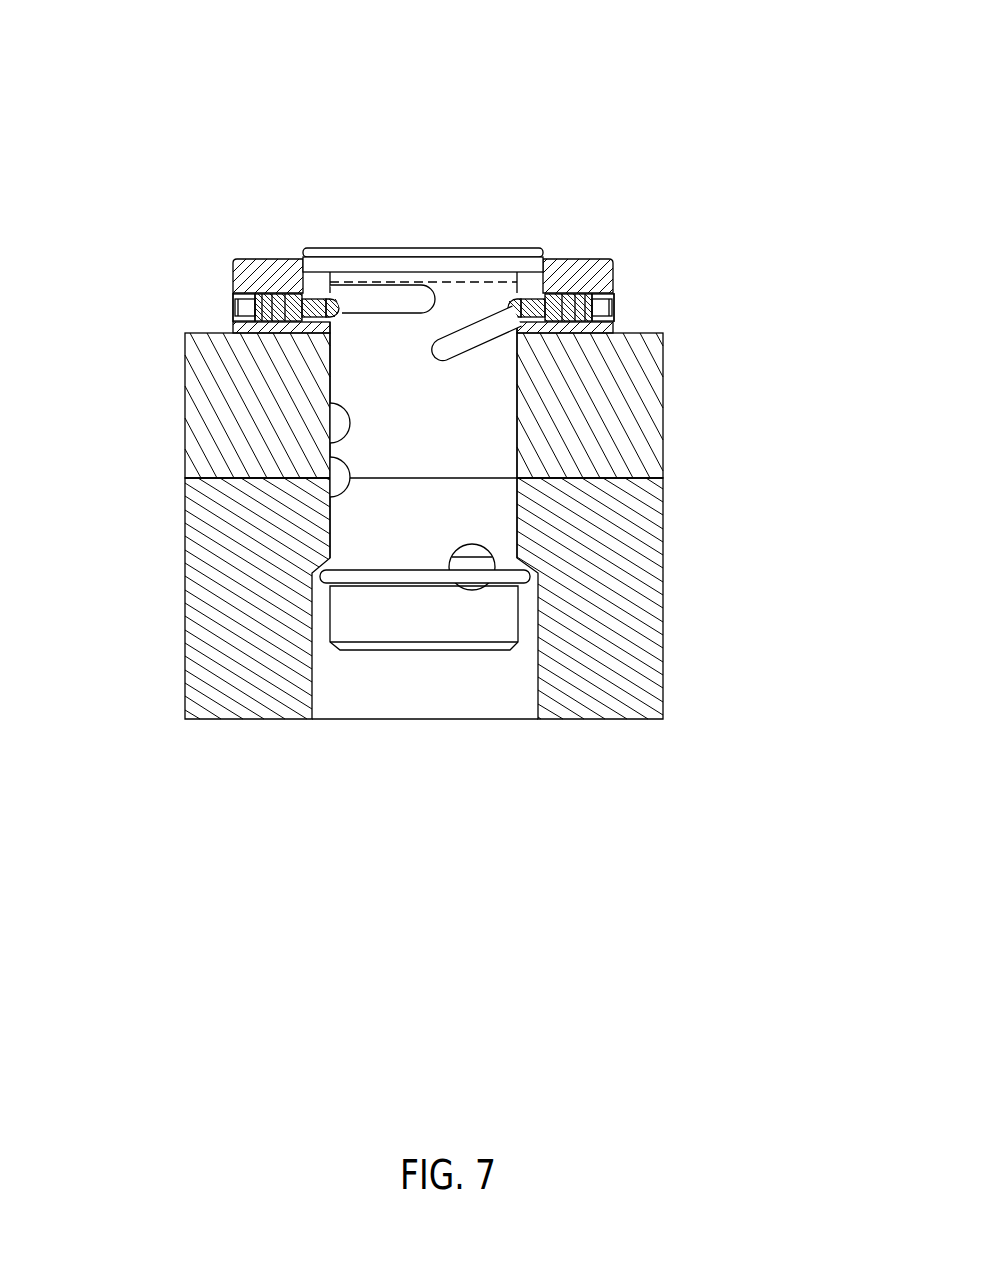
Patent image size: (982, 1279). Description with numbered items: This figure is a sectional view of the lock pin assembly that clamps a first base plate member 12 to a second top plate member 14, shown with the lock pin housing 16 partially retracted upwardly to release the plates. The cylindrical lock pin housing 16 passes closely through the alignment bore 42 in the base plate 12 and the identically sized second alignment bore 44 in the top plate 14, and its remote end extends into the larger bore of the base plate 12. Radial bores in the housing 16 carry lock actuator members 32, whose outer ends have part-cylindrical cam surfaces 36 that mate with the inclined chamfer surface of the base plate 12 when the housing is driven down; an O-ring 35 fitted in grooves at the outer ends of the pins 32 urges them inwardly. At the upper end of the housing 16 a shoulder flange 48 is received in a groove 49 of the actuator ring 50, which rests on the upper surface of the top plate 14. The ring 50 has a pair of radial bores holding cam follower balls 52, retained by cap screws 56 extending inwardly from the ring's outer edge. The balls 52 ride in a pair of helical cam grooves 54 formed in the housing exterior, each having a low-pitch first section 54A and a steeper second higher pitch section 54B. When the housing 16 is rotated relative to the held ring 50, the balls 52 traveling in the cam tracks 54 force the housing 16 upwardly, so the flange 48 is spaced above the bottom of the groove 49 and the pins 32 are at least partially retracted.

The first base plate member 12 is at (629, 680).
The second top plate member 14 is at (619, 410).
The lock pin housing 16 is at (440, 414).
The lock actuator member 32 is at (325, 592).
The O-ring 35 is at (397, 577).
The cam surface 36 is at (329, 541).
The alignment bore 42 is at (235, 452).
The second alignment bore 44 is at (347, 440).
The shoulder flange 48 is at (519, 292).
The groove 49 is at (312, 278).
The actuator ring 50 is at (607, 263).
The cam follower ball 52 is at (343, 275).
The helical cam groove 54 is at (417, 297).
The first section 54A is at (380, 295).
The second higher pitch section 54B is at (448, 348).
The cap screw 56 is at (280, 268).